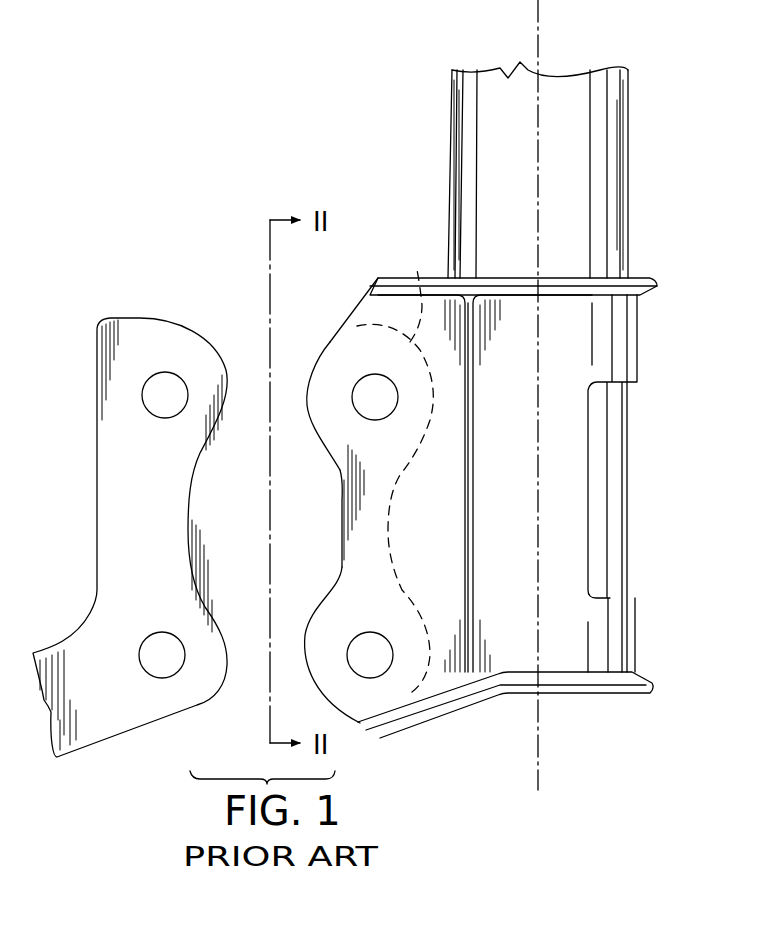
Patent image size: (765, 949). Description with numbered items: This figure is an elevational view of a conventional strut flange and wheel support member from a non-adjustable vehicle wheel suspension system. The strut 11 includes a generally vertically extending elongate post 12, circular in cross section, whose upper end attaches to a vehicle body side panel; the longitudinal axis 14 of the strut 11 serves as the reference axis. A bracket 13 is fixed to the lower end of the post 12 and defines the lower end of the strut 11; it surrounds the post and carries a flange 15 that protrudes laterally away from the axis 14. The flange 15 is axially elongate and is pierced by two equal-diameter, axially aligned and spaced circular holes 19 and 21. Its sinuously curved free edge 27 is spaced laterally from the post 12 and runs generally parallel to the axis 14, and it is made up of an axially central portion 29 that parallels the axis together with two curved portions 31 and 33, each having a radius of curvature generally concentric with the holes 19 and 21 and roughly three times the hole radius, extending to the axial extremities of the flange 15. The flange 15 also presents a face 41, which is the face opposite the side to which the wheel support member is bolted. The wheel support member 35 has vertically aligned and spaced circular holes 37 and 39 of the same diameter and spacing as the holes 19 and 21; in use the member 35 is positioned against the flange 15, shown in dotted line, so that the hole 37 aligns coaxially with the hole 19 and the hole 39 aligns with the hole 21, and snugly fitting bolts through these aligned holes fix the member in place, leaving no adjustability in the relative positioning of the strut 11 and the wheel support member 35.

The strut 11 is at (527, 367).
The elongate post 12 is at (615, 182).
The bracket 13 is at (616, 344).
The longitudinal axis 14 is at (538, 728).
The flange 15 is at (463, 513).
The circular hole 19 is at (368, 378).
The circular hole 21 is at (366, 677).
The free edge 27 is at (350, 316).
The central portion 29 is at (342, 518).
The curved portion 31 is at (307, 397).
The curved portion 33 is at (315, 685).
The wheel support member 35 is at (116, 313).
The circular hole 37 is at (178, 392).
The circular hole 39 is at (170, 676).
The face 41 is at (368, 557).